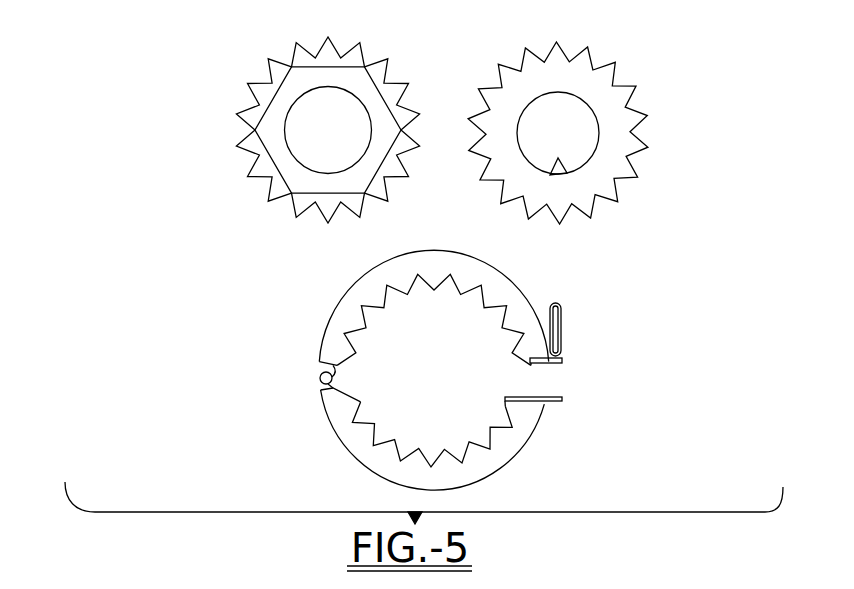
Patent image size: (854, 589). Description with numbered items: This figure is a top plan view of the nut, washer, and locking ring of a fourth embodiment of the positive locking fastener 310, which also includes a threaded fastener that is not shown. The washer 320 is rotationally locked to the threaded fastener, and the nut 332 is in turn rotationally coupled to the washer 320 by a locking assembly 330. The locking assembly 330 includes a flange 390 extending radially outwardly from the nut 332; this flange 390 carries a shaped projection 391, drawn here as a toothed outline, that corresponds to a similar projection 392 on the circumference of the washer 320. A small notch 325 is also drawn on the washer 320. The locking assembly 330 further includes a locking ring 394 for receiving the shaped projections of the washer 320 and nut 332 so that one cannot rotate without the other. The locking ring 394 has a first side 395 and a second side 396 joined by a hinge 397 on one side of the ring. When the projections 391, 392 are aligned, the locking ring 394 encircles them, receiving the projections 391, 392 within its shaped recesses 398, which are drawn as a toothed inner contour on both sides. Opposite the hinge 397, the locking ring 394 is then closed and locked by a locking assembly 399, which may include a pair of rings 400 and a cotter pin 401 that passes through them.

The positive locking fastener 310 is at (195, 283).
The washer 320 is at (633, 88).
The alignment notch 325 is at (558, 160).
The locking assembly 330 is at (502, 207).
The nut 332 is at (273, 97).
The flange 390 is at (332, 53).
The shaped projection 391 is at (387, 60).
The projection 392 is at (582, 47).
The locking ring 394 is at (317, 338).
The first side 395 is at (360, 273).
The second side 396 is at (357, 458).
The hinge 397 is at (320, 379).
The shaped recesses 398 is at (434, 370).
The locking assembly 399 is at (605, 390).
The pair of rings 400 is at (545, 395).
The cotter pin 401 is at (562, 330).